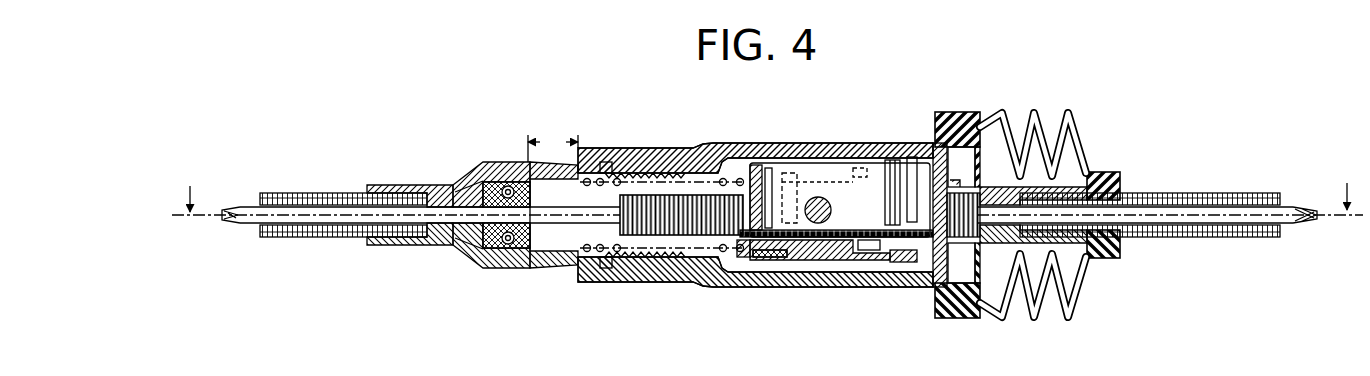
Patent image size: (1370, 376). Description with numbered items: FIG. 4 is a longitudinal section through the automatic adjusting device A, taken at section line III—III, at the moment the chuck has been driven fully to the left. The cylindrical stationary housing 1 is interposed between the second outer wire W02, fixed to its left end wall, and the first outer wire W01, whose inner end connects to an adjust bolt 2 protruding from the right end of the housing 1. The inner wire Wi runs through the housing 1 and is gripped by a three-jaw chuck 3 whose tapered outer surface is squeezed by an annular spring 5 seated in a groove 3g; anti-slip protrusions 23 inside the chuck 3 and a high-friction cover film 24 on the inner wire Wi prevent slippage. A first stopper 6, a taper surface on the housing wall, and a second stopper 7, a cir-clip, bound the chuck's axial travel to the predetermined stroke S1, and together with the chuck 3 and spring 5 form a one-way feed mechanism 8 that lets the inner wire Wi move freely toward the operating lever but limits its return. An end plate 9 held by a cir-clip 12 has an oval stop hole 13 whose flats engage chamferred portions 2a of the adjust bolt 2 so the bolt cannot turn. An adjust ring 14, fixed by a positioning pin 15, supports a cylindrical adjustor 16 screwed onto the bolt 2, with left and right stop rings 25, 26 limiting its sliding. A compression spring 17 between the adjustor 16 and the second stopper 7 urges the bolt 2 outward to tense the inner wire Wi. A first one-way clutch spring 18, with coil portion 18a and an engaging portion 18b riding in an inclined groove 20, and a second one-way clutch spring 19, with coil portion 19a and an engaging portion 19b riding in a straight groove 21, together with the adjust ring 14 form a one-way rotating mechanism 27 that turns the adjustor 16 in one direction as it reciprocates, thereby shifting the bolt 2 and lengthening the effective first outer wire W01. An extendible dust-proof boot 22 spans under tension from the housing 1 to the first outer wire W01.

The stationary housing 1 is at (703, 150).
The adjust bolt 2 is at (1047, 186).
The chamferred portions 2a is at (984, 150).
The three-jaw chuck 3 is at (491, 248).
The outer circumference groove 3g is at (510, 245).
The annular spring 5 is at (510, 182).
The first stopper 6 is at (466, 186).
The second stopper 7 is at (580, 176).
The one-way feed mechanism 8 is at (556, 236).
The end plate 9 is at (935, 134).
The cir-clip 12 is at (961, 167).
The stop hole 13 is at (961, 263).
The adjust ring 14 is at (828, 163).
The positioning pin 15 is at (824, 202).
The cylindrical adjustor 16 is at (825, 260).
The compression spring 17 is at (712, 170).
The first one-way clutch spring 18 is at (789, 173).
The coil portion 18a is at (779, 258).
The engaging portion 18b is at (786, 189).
The second one-way clutch spring 19 is at (935, 200).
The coil portion 19a is at (902, 262).
The engaging portion 19b is at (872, 238).
The inclined groove 20 is at (769, 168).
The straight groove 21 is at (888, 200).
The dust-proof boot 22 is at (1077, 135).
The anti-slip protrusions 23 is at (472, 247).
The cover film 24 is at (403, 217).
The left stop ring 25 is at (747, 240).
The right stop ring 26 is at (910, 157).
The one-way rotating mechanism 27 is at (748, 163).
The automatic adjusting device A is at (612, 147).
The predetermined stroke S1 is at (553, 145).
The first outer wire W01 is at (1195, 193).
The second outer wire W02 is at (324, 193).
The inner wire Wi is at (1303, 211).
The section line III— III is at (768, 184).